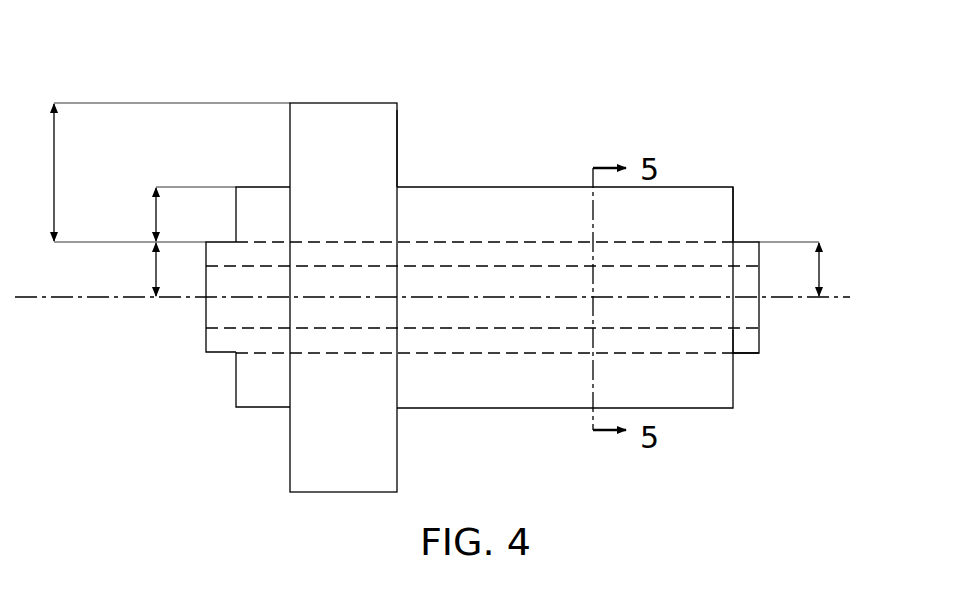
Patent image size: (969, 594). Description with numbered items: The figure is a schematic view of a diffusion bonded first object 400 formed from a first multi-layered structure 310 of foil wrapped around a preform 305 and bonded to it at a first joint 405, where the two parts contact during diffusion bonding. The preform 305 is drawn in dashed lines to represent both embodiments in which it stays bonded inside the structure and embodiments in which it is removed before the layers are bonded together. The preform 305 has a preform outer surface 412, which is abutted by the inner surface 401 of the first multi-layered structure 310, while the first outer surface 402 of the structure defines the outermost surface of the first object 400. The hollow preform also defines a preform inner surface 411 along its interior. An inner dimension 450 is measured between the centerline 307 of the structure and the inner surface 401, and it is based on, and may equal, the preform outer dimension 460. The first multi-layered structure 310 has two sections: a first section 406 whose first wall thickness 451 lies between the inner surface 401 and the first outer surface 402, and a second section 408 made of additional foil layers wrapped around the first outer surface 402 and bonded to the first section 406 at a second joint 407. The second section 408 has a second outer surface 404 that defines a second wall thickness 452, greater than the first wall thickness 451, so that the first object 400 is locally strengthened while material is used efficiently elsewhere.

The first object 400 is at (790, 148).
The inner surface 401 is at (462, 350).
The first outer surface 402 is at (498, 185).
The second outer surface 404 is at (340, 100).
The first joint 405 is at (235, 355).
The first section 406 is at (265, 196).
The second joint 407 is at (288, 410).
The second section 408 is at (397, 157).
The preform inner surface 411 is at (532, 330).
The preform outer surface 412 is at (746, 356).
The preform 305 is at (752, 339).
The centerline 307 is at (72, 300).
The first multi-layered structure 310 is at (726, 208).
The inner dimension 450 is at (155, 270).
The first wall thickness 451 is at (155, 214).
The second wall thickness 452 is at (55, 164).
The preform outer dimension 460 is at (820, 270).